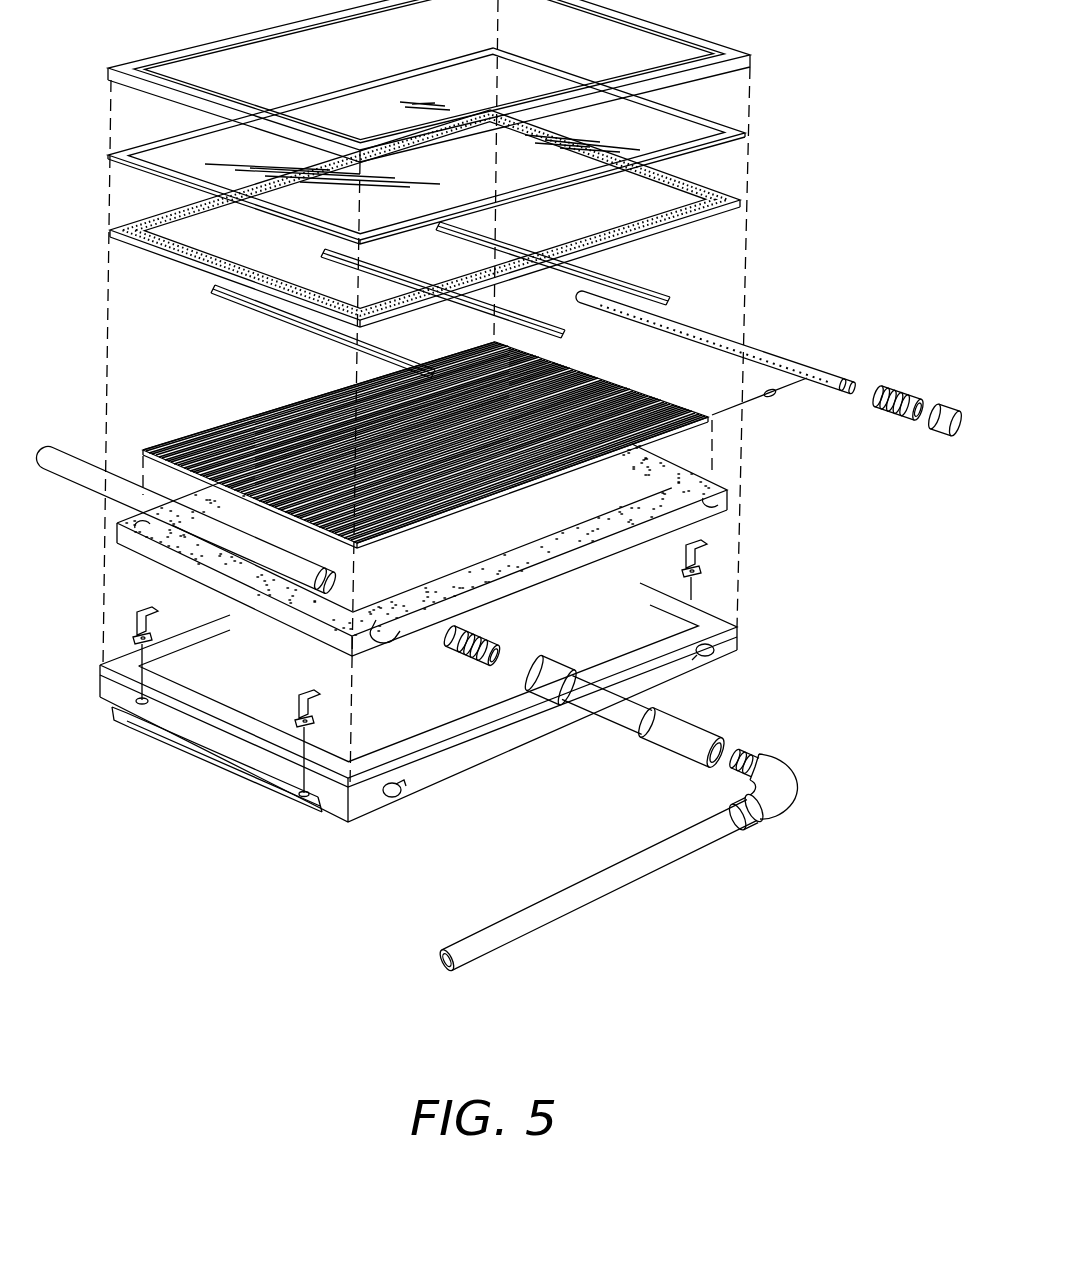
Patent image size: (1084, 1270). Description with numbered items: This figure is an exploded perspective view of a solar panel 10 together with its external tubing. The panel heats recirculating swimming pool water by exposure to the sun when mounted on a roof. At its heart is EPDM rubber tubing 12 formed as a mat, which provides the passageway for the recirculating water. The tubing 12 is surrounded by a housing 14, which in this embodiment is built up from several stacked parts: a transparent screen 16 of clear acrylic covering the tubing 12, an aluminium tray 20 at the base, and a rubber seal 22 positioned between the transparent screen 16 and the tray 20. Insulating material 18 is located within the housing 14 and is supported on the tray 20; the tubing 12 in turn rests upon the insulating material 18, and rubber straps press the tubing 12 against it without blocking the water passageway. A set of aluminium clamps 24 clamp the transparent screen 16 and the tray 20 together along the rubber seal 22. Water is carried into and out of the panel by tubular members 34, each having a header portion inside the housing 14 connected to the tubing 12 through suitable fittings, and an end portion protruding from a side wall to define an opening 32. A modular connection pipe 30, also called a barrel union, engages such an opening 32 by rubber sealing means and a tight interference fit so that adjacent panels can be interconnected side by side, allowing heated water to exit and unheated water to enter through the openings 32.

The solar panel 10 is at (808, 108).
The tubing 12 is at (242, 442).
The housing 14 is at (320, 823).
The transparent screen 16 is at (697, 146).
The insulating material 18 is at (722, 508).
The tray 20 is at (740, 636).
The rubber seal 22 is at (697, 218).
The clamps 24 is at (702, 550).
The modular connection pipe 30 is at (895, 392).
The opening 32 is at (853, 385).
The tubular member 34 is at (757, 350).